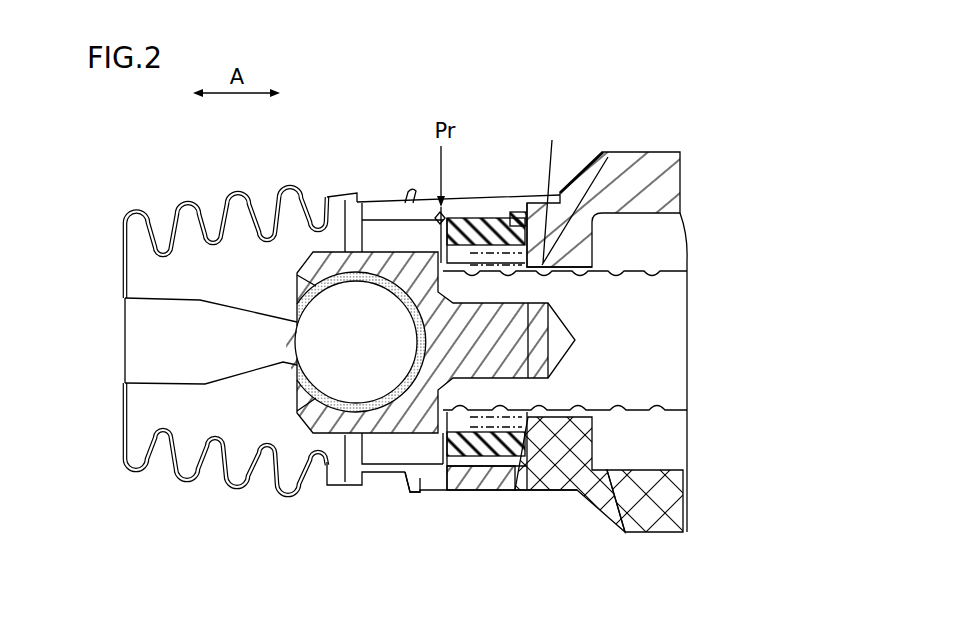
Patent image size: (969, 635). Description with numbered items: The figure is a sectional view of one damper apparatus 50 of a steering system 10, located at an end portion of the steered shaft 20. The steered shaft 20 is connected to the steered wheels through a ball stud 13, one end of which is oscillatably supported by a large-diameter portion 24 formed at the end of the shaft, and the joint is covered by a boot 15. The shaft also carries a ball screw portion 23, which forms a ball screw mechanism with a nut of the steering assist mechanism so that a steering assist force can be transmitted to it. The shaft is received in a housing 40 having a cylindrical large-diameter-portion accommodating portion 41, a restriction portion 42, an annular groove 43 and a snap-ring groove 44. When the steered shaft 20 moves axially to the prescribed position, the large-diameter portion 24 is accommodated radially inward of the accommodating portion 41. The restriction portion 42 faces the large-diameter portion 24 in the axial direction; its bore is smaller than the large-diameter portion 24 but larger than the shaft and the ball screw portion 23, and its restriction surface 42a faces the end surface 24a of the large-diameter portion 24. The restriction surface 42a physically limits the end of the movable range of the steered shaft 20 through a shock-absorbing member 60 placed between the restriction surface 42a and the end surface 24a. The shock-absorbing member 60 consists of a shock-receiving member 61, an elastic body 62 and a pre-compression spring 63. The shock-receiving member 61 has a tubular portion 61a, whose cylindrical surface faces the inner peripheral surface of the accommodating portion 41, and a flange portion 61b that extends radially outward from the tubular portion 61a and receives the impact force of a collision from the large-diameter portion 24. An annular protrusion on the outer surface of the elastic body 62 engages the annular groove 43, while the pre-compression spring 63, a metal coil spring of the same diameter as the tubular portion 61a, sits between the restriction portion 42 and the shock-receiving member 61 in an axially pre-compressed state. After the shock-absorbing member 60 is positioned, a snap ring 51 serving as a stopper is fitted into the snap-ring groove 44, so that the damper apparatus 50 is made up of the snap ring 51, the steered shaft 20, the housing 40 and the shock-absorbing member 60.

The steering system 10 is at (401, 103).
The ball stud 13 is at (250, 327).
The boot 15 is at (185, 206).
The steered shaft 20 is at (677, 265).
The ball screw portion 23 is at (670, 361).
The large-diameter portion 24 is at (326, 196).
The end surface 24a is at (450, 218).
The housing 40 is at (653, 143).
The large-diameter-portion accommodating portion 41 is at (385, 478).
The restriction portion 42 is at (596, 185).
The restriction surface 42a is at (552, 140).
The annular groove 43 is at (514, 210).
The snap-ring groove 44 is at (410, 191).
The damper apparatus 50 is at (330, 462).
The snap ring 51 is at (419, 492).
The shock-absorbing member 60 is at (603, 497).
The shock-receiving member 61 is at (500, 556).
The tubular portion 61a is at (478, 470).
The flange portion 61b is at (466, 478).
The elastic body 62 is at (502, 470).
The pre-compression spring 63 is at (540, 476).